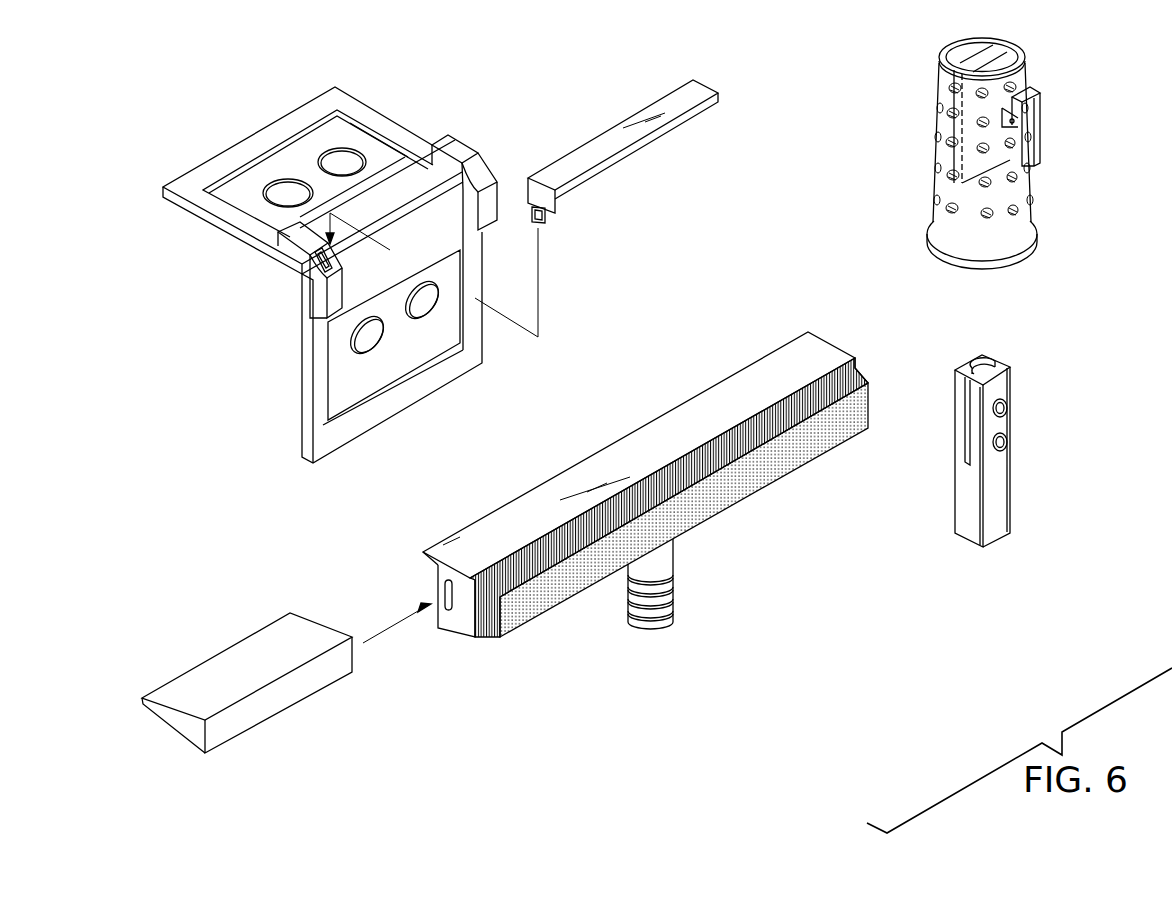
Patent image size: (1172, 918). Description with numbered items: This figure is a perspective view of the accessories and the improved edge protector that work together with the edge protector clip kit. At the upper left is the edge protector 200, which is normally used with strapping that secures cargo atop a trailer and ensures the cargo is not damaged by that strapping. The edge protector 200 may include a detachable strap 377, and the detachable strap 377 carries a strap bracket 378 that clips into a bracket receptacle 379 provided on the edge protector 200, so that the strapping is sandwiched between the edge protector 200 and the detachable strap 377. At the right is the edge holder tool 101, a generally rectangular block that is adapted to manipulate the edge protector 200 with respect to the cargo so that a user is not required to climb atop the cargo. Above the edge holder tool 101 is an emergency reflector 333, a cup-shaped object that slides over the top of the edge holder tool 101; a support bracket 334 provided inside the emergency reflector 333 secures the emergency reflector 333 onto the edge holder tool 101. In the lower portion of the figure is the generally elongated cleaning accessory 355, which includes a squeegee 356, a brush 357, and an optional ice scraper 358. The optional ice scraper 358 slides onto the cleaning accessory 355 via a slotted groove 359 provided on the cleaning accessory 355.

The edge protector 200 is at (221, 127).
The bracket receptacle 379 is at (310, 270).
The detachable strap 377 is at (567, 157).
The strap bracket 378 is at (546, 220).
The emergency reflector 333 is at (982, 350).
The support bracket 334 is at (963, 184).
The edge holder tool 101 is at (1011, 355).
The cleaning accessory 355 is at (855, 327).
The squeegee 356 is at (745, 368).
The brush 357 is at (690, 512).
The ice scraper 358 is at (320, 627).
The slotted groove 359 is at (452, 613).